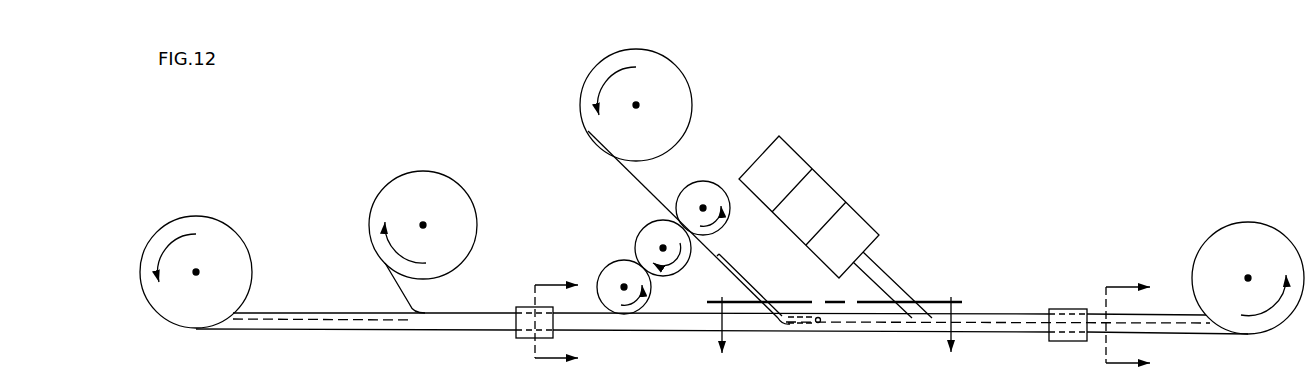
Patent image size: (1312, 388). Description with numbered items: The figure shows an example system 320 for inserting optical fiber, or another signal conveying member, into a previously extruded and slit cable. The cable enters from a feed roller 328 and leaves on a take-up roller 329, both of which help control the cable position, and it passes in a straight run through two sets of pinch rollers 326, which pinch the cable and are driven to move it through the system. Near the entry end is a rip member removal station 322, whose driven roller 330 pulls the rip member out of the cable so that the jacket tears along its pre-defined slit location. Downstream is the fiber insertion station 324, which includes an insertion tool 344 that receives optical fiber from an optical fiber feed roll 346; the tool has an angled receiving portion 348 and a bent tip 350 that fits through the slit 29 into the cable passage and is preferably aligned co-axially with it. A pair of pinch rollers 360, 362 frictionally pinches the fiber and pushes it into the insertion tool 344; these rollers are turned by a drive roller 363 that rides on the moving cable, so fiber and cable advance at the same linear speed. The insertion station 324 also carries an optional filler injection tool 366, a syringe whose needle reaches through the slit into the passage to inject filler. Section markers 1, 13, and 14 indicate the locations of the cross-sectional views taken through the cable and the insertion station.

The section line 1- 1 is at (1128, 324).
The section line 13- 13 is at (561, 321).
The section line 14- 14 is at (837, 336).
The slit 29 is at (722, 350).
The system 320 is at (833, 90).
The rip member removal station 322 is at (425, 110).
The fiber insertion station 324 is at (778, 270).
The pinch rollers 326 is at (515, 336).
The feed roller 328 is at (207, 216).
The take-up roller 329 is at (1267, 223).
The driven roller 330 is at (450, 172).
The insertion tool 344 is at (766, 296).
The optical fiber feed roll 346 is at (679, 181).
The angled receiving portion 348 is at (724, 270).
The bent tip 350 is at (807, 326).
The pinch roller 360 is at (648, 228).
The pinch roller 362 is at (704, 180).
The drive roller 363 is at (607, 262).
The filler injection tool 366 is at (863, 218).